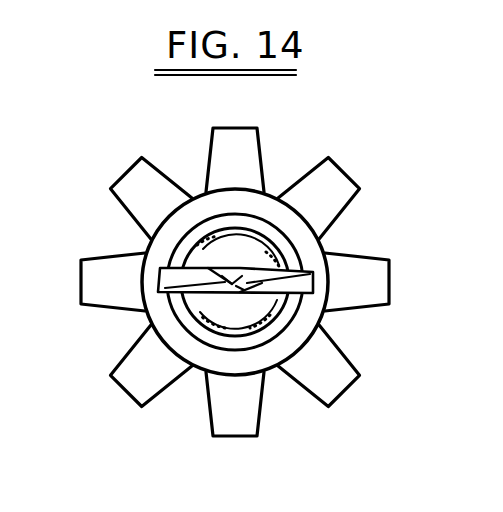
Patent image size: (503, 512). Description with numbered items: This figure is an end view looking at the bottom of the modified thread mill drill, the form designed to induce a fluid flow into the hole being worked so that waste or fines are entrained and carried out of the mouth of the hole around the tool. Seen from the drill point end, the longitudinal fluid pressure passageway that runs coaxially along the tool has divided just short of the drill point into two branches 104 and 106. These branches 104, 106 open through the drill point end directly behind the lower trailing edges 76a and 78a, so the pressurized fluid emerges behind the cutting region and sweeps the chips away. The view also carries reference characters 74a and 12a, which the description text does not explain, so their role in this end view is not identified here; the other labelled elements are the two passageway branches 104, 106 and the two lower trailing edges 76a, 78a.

The branch 104 is at (152, 248).
The lower trailing edge 76a is at (208, 268).
The gear wheel 74a is at (147, 313).
The inner ring 12a is at (295, 260).
The lower trailing edge 78a is at (340, 313).
The branch 106 is at (310, 337).